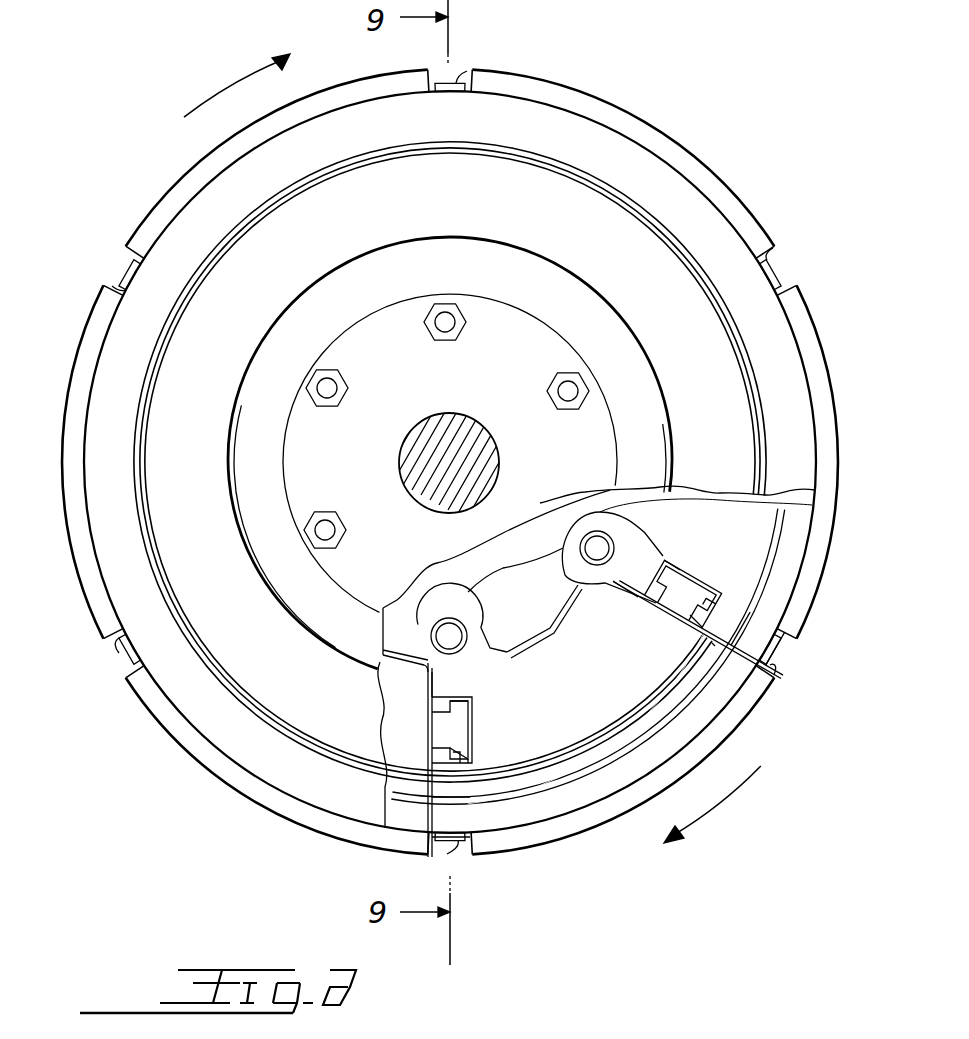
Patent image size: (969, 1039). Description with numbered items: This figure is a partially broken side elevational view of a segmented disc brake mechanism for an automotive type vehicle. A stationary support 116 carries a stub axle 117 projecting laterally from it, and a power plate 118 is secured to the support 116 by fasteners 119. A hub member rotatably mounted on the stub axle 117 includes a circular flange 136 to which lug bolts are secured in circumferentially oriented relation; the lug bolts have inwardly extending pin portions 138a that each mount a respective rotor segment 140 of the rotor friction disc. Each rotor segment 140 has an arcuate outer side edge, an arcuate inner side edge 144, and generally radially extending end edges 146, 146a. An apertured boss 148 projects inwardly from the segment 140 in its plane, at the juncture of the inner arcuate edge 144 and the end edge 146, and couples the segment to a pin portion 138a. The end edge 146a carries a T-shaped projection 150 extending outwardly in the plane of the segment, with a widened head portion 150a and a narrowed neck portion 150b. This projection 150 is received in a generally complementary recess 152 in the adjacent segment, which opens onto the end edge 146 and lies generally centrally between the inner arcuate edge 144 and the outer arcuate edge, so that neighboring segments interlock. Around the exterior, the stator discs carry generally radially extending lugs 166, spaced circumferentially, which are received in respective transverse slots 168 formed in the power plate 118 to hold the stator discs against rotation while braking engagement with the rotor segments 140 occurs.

The stationary support 116 is at (538, 354).
The stub axle 117 is at (474, 420).
The power plate 118 is at (533, 213).
The fasteners 119 is at (447, 325).
The circular flange 136 is at (577, 597).
The pin portions 138a is at (448, 632).
The rotor segment 140 is at (585, 719).
The arcuate inner side edge 144 is at (560, 632).
The end edge 146 is at (795, 585).
The end edge 146a is at (432, 678).
The apertured boss 148 is at (563, 548).
The projection 150 is at (687, 587).
The widened head portion 150a is at (676, 568).
The narrowed neck portion 150b is at (677, 597).
The recess 152 is at (740, 587).
The lugs 166 is at (473, 72).
The slots 168 is at (440, 72).